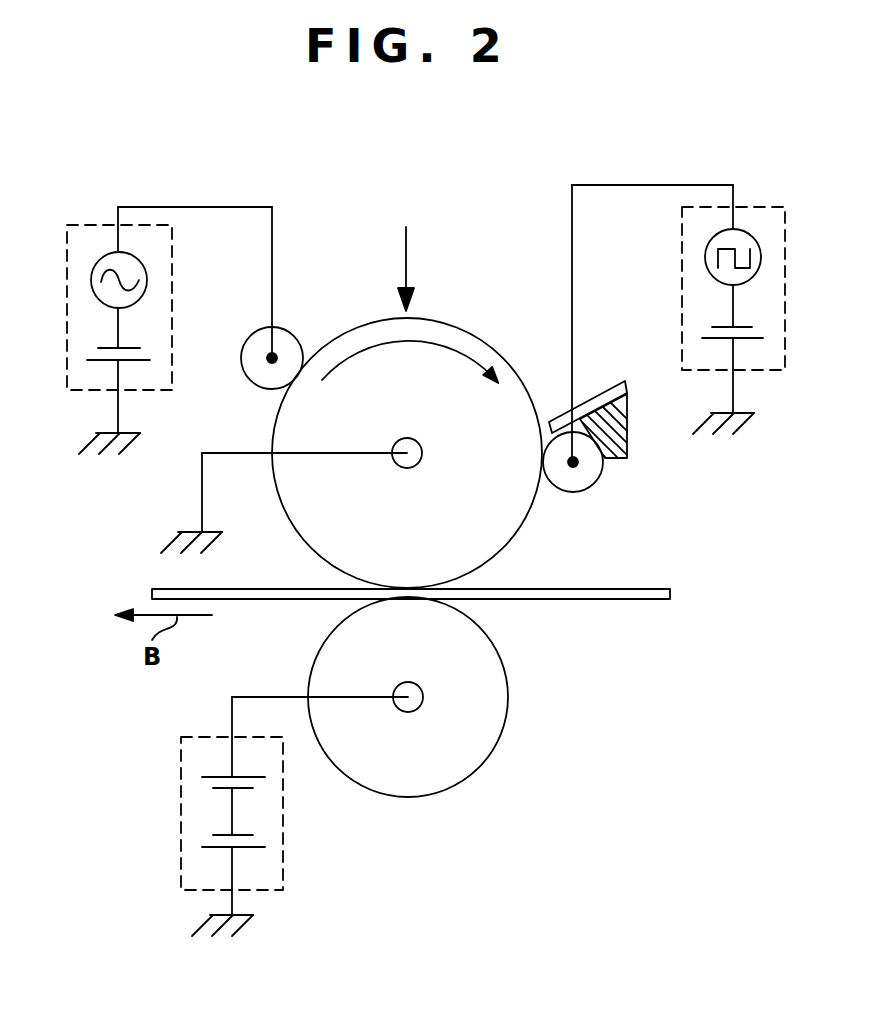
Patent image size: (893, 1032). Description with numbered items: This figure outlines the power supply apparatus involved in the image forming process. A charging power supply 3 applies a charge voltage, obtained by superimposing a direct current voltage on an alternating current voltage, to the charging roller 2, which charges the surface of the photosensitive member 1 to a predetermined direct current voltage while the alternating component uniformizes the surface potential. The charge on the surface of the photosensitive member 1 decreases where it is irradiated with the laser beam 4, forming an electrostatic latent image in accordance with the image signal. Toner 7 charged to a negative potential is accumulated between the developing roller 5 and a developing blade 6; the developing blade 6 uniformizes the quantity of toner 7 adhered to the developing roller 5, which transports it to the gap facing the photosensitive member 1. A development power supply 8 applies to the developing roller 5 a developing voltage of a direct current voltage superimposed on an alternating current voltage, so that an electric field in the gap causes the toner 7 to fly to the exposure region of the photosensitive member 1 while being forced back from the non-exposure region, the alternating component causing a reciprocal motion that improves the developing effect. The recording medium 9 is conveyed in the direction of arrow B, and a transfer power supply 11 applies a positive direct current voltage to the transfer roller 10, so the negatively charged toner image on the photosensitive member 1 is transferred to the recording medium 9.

The photosensitive member 1 is at (440, 322).
The charging roller 2 is at (282, 330).
The charging power supply 3 is at (68, 232).
The laser beam 4 is at (407, 256).
The developing roller 5 is at (590, 492).
The developing blade 6 is at (604, 390).
The toner 7 is at (627, 445).
The development power supply 8 is at (785, 208).
The recording medium 9 is at (655, 590).
The transfer roller 10 is at (485, 742).
The transfer power supply 11 is at (182, 802).